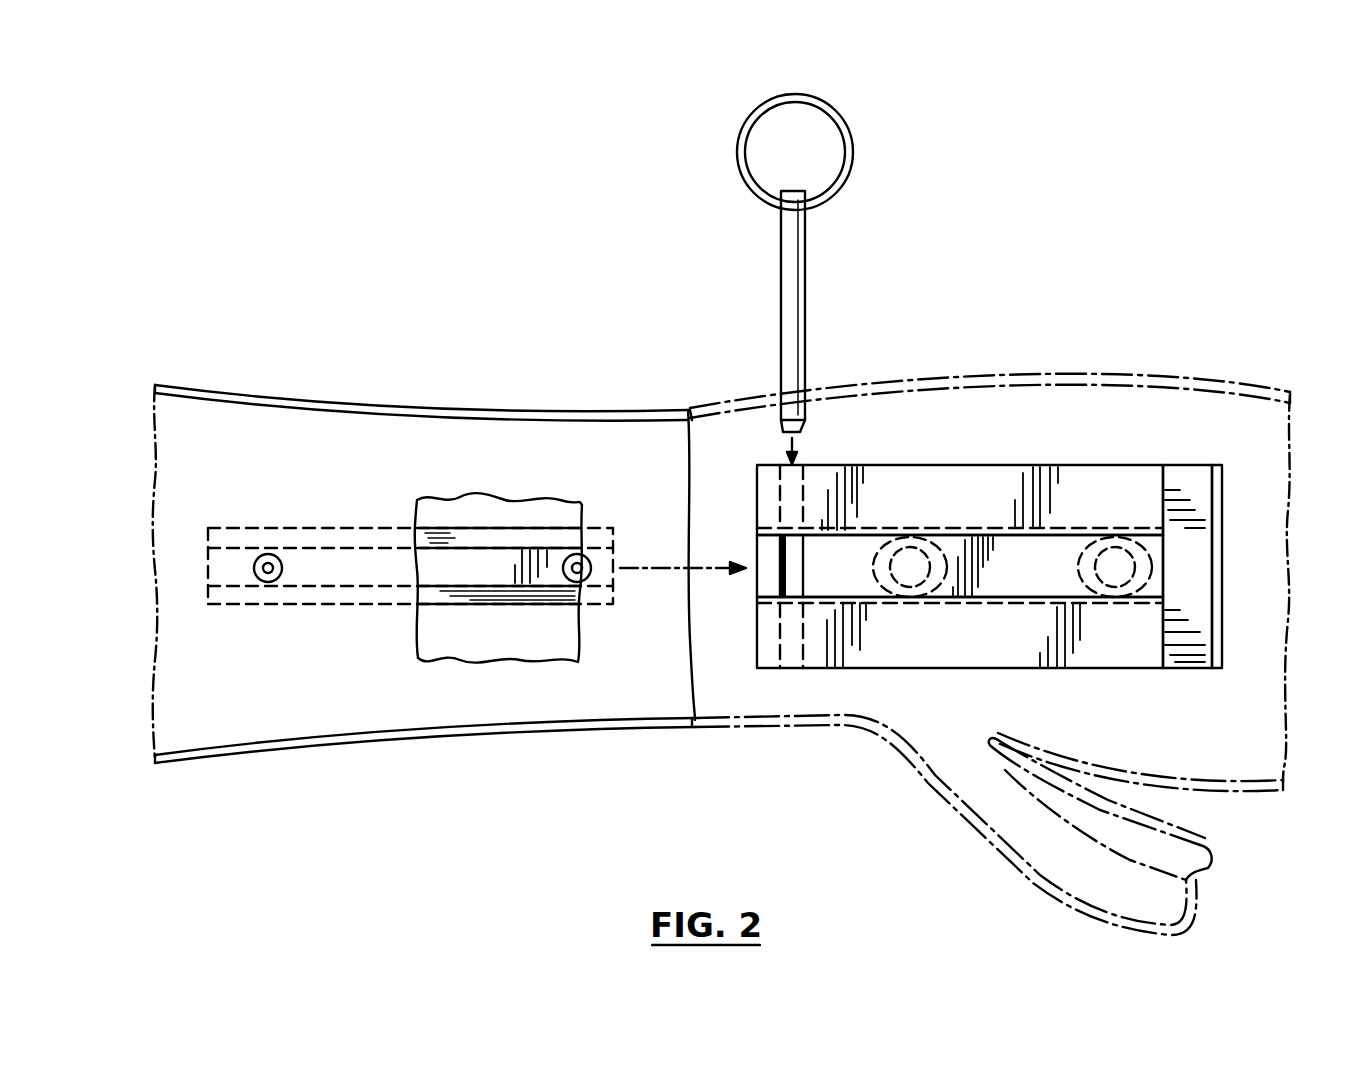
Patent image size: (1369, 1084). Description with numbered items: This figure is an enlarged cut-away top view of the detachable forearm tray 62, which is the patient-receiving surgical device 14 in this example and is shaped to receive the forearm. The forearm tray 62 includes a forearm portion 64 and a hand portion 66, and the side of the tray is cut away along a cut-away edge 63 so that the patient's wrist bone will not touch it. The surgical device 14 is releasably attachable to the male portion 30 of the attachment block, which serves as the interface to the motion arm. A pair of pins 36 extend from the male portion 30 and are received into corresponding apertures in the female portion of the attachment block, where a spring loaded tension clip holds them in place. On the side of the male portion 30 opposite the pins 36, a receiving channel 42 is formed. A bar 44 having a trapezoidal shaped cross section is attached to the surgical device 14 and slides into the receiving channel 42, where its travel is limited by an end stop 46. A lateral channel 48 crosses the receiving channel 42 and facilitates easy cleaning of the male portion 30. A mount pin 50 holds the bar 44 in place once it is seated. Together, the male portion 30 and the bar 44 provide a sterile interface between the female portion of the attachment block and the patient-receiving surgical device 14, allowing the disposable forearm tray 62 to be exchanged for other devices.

The surgical device 14 is at (578, 447).
The male portion 30 is at (977, 470).
The pins 36 is at (912, 533).
The receiving channel 42 is at (1005, 590).
The bar 44 is at (488, 530).
The end stop 46 is at (1215, 560).
The lateral channel 48 is at (1188, 467).
The mount pin 50 is at (790, 305).
The forearm tray 62 is at (520, 700).
The hand edge 63 is at (975, 788).
The forearm portion 64 is at (625, 722).
The hand portion 66 is at (1272, 722).